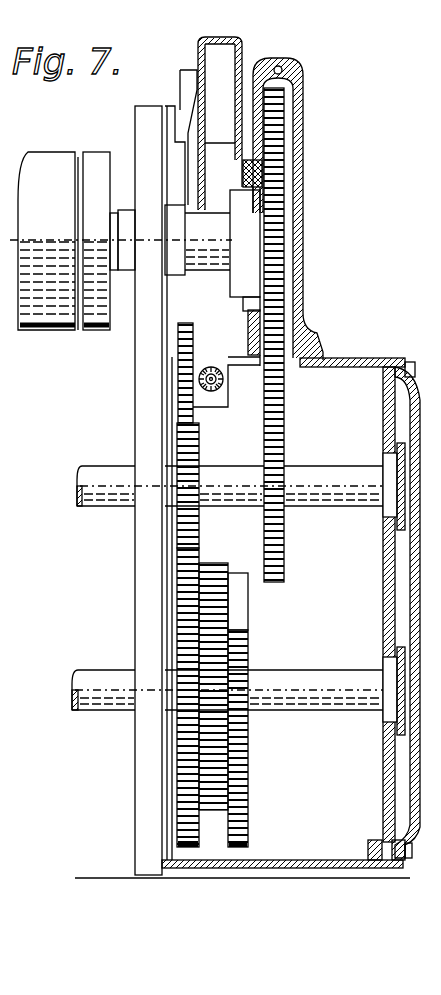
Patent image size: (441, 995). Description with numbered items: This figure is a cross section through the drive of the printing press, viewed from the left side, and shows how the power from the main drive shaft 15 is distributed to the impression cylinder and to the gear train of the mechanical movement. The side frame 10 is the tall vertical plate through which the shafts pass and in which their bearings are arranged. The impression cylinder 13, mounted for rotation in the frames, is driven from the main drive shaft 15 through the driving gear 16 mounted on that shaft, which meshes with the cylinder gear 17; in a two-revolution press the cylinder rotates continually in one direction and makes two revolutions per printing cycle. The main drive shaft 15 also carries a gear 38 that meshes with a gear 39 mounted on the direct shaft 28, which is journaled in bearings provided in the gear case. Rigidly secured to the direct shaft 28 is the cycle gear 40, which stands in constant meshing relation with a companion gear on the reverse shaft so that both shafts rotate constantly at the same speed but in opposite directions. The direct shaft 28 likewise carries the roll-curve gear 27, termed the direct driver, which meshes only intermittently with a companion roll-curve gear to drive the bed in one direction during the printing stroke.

The side frame 10 is at (138, 595).
The impression cylinder 13 is at (43, 332).
The main drive shaft 15 is at (325, 474).
The driving gear 16 is at (284, 412).
The cylinder gear 17 is at (276, 310).
The roll-curve gear (direct driver) 27 is at (243, 815).
The direct shaft 28 is at (337, 681).
The gear 38 is at (201, 440).
The gear 39 is at (178, 562).
The cycle gear 40 is at (200, 635).